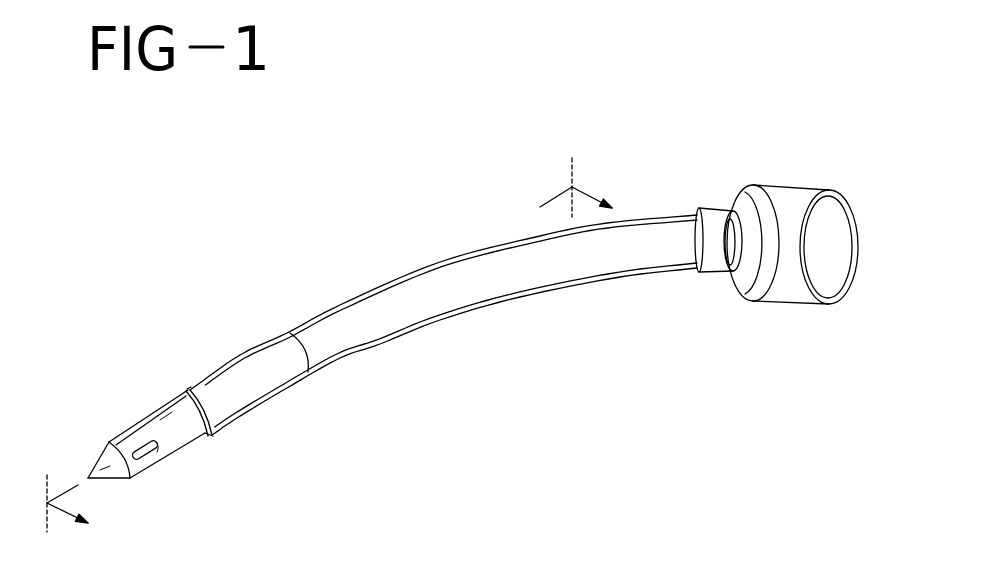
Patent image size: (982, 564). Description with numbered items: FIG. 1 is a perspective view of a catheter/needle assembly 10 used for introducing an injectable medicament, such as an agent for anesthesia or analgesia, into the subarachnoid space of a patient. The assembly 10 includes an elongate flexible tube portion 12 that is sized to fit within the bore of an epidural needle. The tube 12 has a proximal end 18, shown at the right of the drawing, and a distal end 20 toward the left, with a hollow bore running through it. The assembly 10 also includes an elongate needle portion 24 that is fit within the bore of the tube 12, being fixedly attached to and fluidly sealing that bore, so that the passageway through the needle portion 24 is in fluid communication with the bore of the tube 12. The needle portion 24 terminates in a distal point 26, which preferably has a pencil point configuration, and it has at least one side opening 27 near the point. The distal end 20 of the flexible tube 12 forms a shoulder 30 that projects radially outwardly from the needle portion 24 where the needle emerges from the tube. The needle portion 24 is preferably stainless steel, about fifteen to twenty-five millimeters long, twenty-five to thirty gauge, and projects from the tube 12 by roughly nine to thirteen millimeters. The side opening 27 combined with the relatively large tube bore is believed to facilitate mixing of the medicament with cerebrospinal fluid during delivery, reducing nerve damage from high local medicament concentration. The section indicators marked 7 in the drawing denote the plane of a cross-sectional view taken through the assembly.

The catheter/needle assembly 10 is at (372, 198).
The elongate flexible tube portion 12 is at (427, 327).
The proximal end 18 is at (787, 187).
The distal end 20 is at (235, 418).
The elongate needle portion 24 is at (160, 458).
The distal point 26 is at (92, 470).
The side opening 27 is at (157, 430).
The shoulder 30 is at (180, 390).
The section line 7- 7 is at (318, 345).